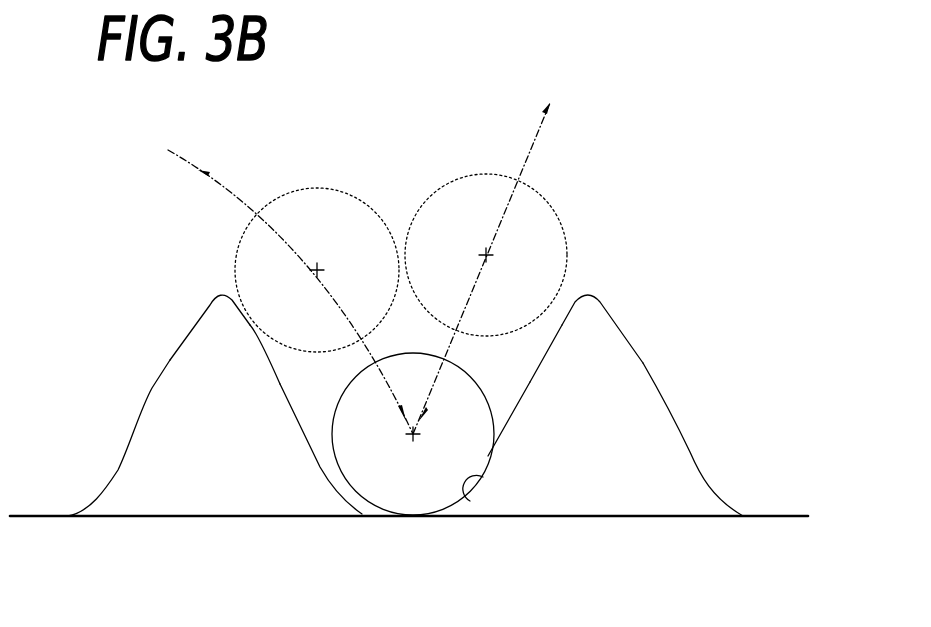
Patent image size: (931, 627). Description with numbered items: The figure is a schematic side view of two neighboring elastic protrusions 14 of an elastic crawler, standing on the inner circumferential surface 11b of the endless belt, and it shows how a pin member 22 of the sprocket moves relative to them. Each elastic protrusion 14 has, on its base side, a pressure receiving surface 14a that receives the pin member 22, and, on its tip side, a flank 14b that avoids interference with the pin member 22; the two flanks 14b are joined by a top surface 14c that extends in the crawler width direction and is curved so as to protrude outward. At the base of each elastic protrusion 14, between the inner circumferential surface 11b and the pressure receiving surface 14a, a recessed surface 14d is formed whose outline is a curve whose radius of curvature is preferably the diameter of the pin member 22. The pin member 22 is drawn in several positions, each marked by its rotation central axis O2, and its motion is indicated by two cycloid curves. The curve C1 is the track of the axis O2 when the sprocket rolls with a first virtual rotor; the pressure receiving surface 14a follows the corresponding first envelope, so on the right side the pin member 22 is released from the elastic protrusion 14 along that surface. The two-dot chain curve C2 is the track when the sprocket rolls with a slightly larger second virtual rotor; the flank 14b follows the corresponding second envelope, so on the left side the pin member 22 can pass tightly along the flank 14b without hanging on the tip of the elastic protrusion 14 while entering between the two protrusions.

The inner circumferential surface 11b is at (778, 515).
The elastic protrusion 14 is at (148, 393).
The pressure receiving surface 14a is at (310, 439).
The flank 14b is at (260, 337).
The top surface 14c is at (220, 294).
The recessed surface 14d is at (483, 477).
The pin member 22 is at (417, 217).
The rotation central axis of the pin member O2 is at (320, 268).
The cycloid curve C1 is at (495, 255).
The cycloid curve C2 is at (275, 280).